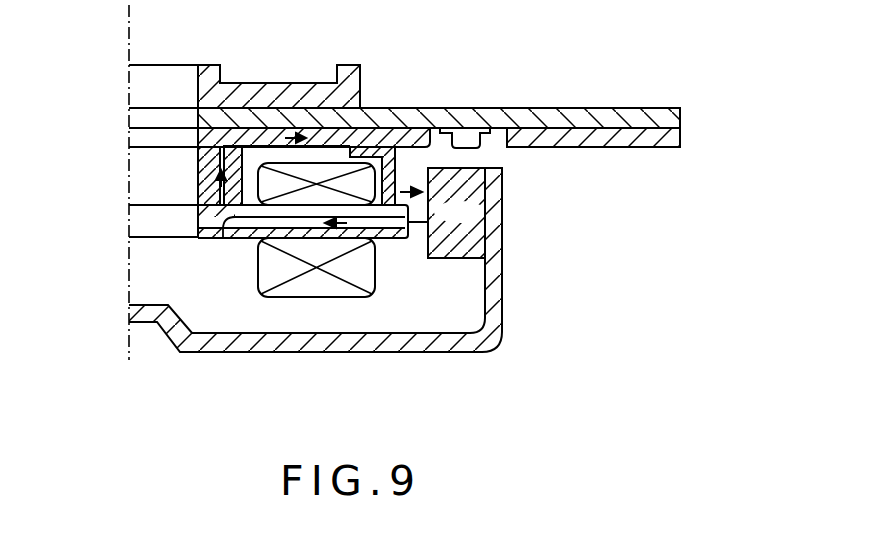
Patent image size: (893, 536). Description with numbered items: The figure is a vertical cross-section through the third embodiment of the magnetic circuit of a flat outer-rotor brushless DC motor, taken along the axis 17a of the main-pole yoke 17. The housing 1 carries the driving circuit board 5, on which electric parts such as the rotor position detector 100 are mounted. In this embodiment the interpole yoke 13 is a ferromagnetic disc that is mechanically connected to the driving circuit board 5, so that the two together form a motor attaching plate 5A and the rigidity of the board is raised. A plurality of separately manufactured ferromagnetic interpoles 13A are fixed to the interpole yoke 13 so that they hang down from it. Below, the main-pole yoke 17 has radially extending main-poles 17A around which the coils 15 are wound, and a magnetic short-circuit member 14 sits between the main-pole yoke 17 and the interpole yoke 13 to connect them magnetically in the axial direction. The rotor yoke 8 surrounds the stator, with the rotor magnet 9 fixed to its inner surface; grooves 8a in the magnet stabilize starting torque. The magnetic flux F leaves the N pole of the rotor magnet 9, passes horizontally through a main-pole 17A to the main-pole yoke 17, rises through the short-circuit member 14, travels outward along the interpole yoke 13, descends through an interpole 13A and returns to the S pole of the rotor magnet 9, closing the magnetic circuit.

The housing 1 is at (243, 83).
The driving circuit board 5 is at (643, 113).
The motor attaching plate 5A is at (474, 112).
The rotor yoke 8 is at (493, 317).
The grooves 8a is at (501, 216).
The rotor magnet 9 is at (472, 241).
The interpole yoke 13 is at (398, 138).
The interpoles 13A is at (390, 158).
The magnetic short-circuit member 14 is at (198, 173).
The coils 15 is at (335, 285).
The main-pole yoke 17 is at (217, 239).
The main-poles 17A is at (393, 239).
The axis 17a is at (129, 176).
The rotor position detector 100 is at (477, 148).
The magnetic flux F is at (301, 83).